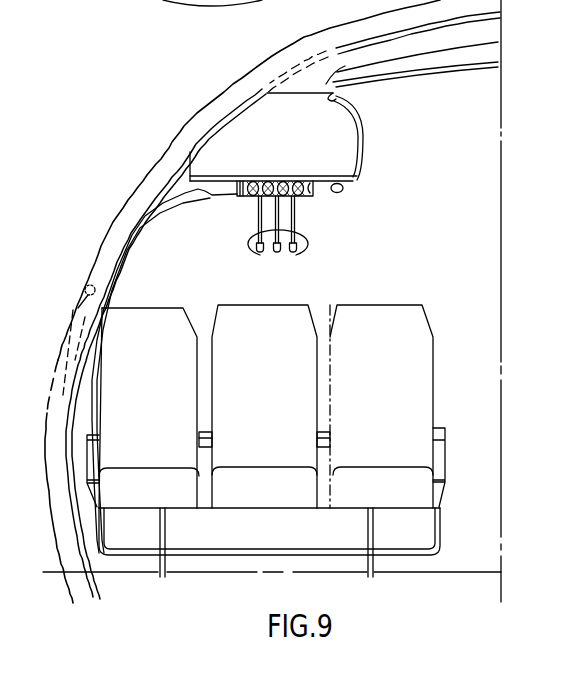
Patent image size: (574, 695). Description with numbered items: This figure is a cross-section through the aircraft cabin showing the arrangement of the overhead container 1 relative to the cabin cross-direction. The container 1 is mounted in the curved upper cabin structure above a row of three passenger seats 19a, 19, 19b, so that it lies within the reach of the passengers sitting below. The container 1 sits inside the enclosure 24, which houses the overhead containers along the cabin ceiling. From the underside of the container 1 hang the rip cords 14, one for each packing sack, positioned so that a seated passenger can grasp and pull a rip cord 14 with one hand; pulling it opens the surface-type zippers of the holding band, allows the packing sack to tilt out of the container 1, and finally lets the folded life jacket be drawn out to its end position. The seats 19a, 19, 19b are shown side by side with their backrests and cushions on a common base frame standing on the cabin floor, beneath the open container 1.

The container 1 is at (276, 187).
The rip cord 14 is at (259, 256).
The enclosure 24 is at (321, 190).
The passenger seat 19 is at (278, 365).
The passenger seat 19a is at (167, 366).
The passenger seat 19b is at (395, 365).